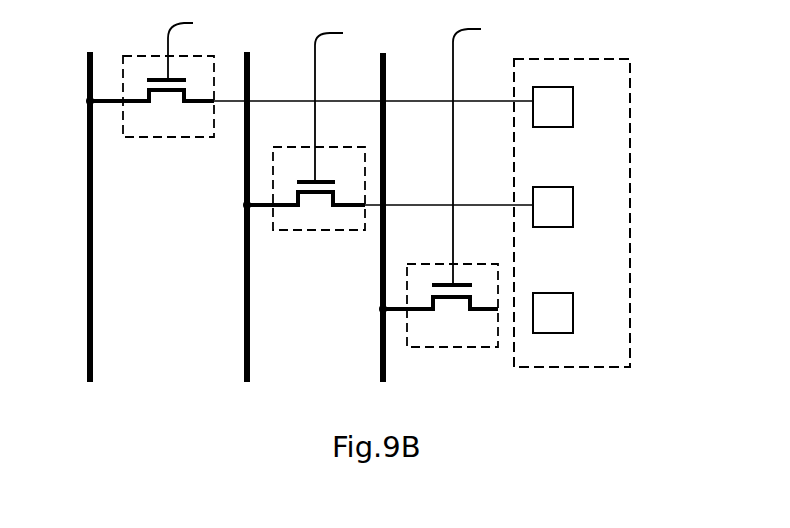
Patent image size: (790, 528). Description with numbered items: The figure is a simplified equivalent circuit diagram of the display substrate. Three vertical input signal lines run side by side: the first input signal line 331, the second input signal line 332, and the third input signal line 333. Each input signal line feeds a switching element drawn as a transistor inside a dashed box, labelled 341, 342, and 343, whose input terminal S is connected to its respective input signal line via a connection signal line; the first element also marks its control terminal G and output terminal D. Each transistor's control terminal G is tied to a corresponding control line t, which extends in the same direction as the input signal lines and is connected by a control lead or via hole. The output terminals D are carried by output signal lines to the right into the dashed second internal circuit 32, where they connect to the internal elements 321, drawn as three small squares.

The first input signal line 331 is at (90, 53).
The second input signal line 332 is at (247, 53).
The third input signal line 333 is at (383, 53).
The first switching transistor 341 is at (100, 103).
The second switching transistor 342 is at (258, 207).
The third switching transistor 343 is at (395, 312).
The second internal circuit 32 is at (595, 59).
The internal element 321 is at (573, 87).